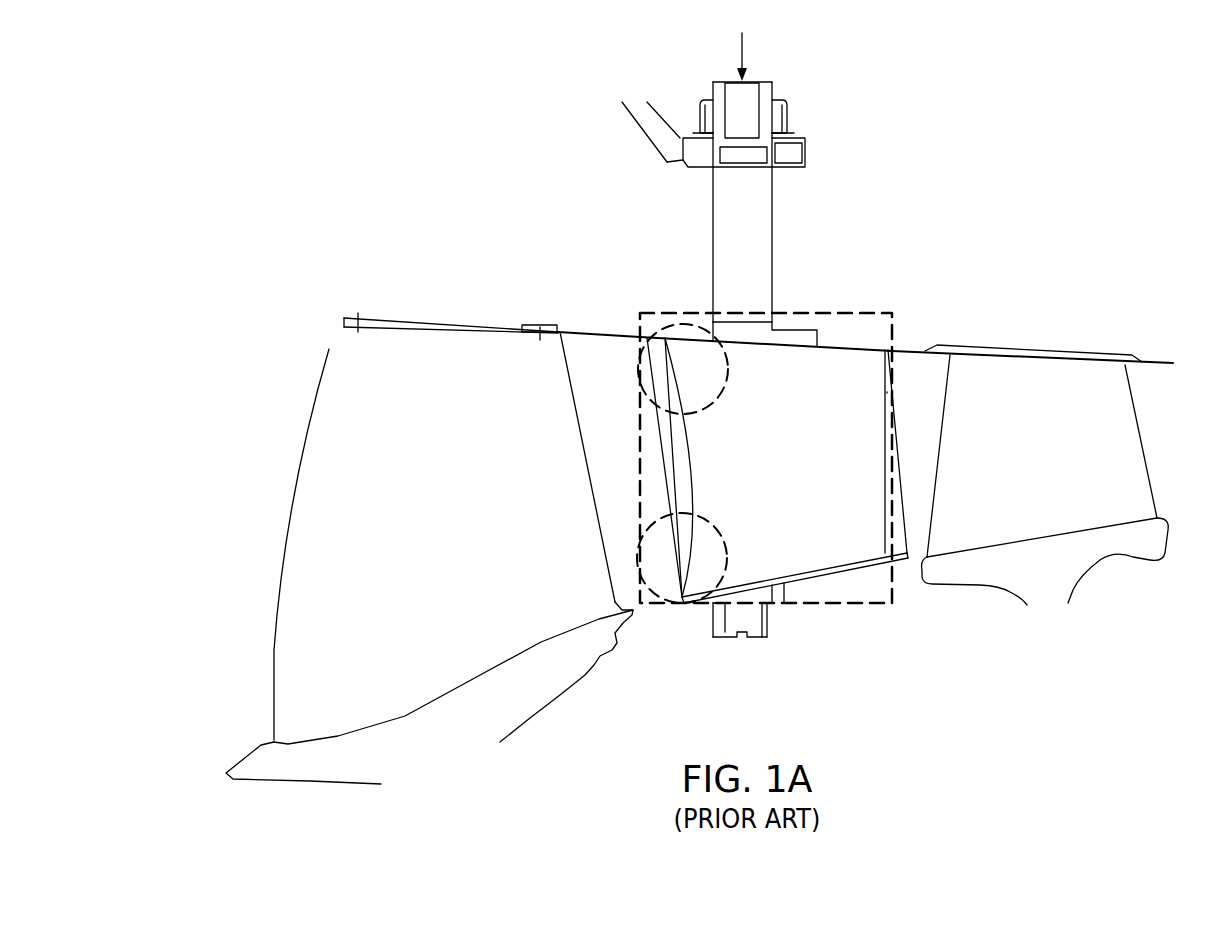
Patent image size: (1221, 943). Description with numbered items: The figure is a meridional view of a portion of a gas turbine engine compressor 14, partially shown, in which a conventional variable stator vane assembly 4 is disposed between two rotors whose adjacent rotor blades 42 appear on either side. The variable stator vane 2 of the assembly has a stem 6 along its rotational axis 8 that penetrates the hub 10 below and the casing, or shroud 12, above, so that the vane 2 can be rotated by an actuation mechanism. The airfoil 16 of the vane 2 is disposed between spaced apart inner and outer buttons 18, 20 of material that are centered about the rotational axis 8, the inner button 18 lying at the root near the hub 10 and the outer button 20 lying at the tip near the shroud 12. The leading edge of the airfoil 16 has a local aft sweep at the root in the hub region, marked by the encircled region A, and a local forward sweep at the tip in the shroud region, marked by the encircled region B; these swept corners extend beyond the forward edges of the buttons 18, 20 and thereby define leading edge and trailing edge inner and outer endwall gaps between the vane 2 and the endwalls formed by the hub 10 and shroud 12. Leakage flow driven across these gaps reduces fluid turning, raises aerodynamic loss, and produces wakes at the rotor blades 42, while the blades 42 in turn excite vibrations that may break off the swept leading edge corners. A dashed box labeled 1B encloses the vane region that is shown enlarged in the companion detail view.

The variable stator vane 2 is at (774, 481).
The variable stator vane assembly 4 is at (711, 214).
The stem 6 is at (775, 95).
The rotational axis 8 is at (747, 56).
The hub 10 is at (840, 573).
The shroud 12 is at (405, 320).
The compressor 14 is at (802, 257).
The airfoil 16 is at (887, 392).
The inner button 18 is at (787, 632).
The outer button 20 is at (773, 289).
The rotor blade 42 is at (294, 642).
The detail view reference 1B is at (892, 312).
The encircled region A is at (728, 553).
The encircled region B is at (728, 370).